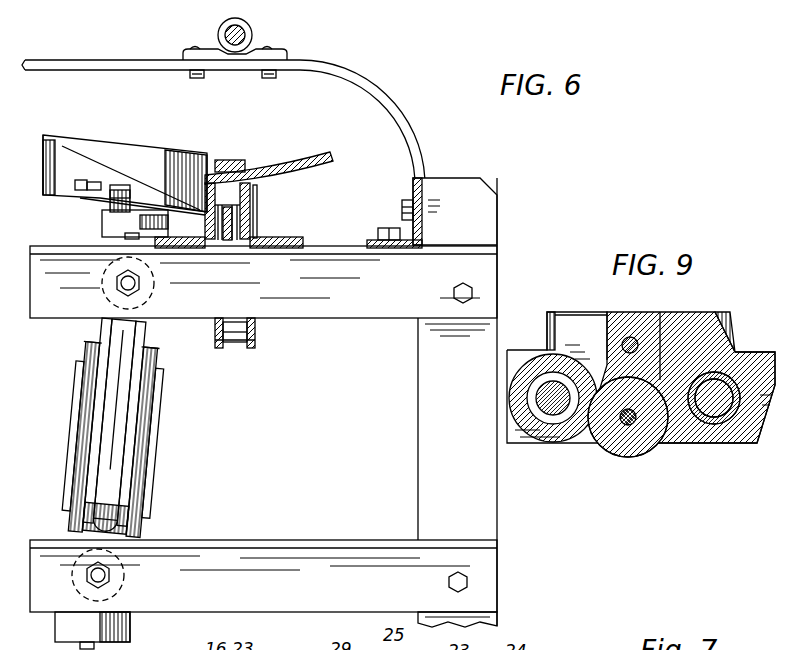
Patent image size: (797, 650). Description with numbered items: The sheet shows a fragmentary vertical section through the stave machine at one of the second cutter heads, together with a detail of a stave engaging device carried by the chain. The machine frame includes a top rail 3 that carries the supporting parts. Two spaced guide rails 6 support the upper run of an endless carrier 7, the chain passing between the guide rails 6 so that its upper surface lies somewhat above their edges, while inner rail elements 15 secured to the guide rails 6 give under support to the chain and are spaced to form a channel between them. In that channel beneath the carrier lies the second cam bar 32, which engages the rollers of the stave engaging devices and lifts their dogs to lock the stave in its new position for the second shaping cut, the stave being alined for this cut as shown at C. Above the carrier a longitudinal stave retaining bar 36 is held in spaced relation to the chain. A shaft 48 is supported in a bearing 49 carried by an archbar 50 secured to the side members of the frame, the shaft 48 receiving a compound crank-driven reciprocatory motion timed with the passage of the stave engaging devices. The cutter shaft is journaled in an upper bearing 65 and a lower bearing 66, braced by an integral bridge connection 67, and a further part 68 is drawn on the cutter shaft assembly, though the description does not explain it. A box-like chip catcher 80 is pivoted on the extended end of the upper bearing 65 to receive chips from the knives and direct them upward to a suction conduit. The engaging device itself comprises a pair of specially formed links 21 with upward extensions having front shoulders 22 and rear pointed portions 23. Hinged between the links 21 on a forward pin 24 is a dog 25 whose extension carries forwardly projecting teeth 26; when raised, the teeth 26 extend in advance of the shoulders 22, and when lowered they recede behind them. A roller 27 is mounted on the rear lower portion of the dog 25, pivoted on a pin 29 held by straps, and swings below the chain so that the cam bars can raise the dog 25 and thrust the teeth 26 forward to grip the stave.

In FIG. 6, the top rail 3 is at (424, 226).
In FIG. 6, the guide rail 6 is at (251, 229).
In FIG. 6, the endless carrier 7 is at (258, 197).
In FIG. 6, the inner rail element 15 is at (222, 240).
In FIG. 6, the cam bar 32 is at (229, 240).
In FIG. 6, the stave retaining bar 36 is at (238, 160).
In FIG. 6, the stave position C is at (308, 162).
In FIG. 6, the shaft 48 is at (246, 26).
In FIG. 6, the bearing 49 is at (218, 40).
In FIG. 6, the archbar 50 is at (408, 116).
In FIG. 6, the upper bearing 65 is at (102, 240).
In FIG. 6, the lower bearing 66 is at (130, 633).
In FIG. 6, the bridge connection 67 is at (148, 372).
In FIG. 6, the cylinder body 68 is at (158, 488).
In FIG. 6, the chip catcher 80 is at (182, 152).
In FIG. 9, the link 21 is at (574, 438).
In FIG. 9, the shoulder 22 is at (680, 312).
In FIG. 9, the pointed portion 23 is at (547, 325).
In FIG. 9, the forward pin 24 is at (720, 412).
In FIG. 9, the dog 25 is at (690, 440).
In FIG. 9, the tooth 26 is at (728, 322).
In FIG. 9, the roller 27 is at (633, 458).
In FIG. 9, the pin 29 is at (624, 426).